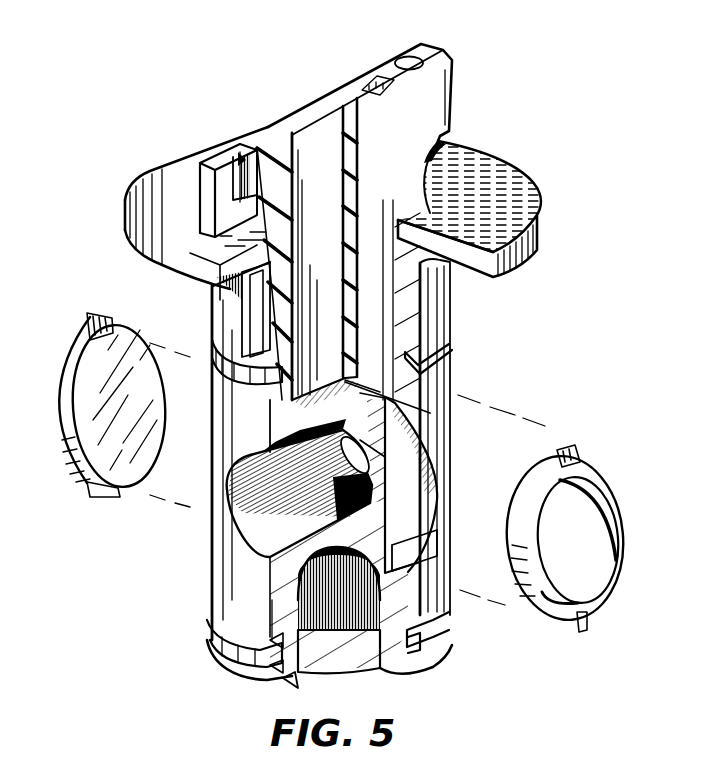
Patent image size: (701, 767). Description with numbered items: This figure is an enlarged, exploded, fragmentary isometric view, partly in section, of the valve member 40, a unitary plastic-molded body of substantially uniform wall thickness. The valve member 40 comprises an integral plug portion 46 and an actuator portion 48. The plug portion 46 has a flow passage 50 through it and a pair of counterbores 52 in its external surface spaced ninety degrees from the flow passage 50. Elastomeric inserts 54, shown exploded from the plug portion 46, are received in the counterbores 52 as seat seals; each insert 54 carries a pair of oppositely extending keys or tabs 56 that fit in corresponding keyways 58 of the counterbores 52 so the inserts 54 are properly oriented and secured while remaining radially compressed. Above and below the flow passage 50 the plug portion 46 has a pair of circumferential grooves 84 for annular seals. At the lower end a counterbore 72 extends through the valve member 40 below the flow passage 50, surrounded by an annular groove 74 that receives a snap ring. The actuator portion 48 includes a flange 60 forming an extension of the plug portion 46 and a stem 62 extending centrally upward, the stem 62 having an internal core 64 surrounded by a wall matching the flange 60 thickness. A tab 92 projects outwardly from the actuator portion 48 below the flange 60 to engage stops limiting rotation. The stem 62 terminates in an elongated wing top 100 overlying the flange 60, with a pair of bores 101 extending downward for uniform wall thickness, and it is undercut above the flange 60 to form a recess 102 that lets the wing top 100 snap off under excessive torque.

The valve member 40 is at (578, 327).
The plug portion 46 is at (240, 555).
The actuator portion 48 is at (213, 302).
The flow passage 50 is at (240, 502).
The counterbores 52 is at (436, 477).
The elastomeric inserts 54 is at (92, 378).
The keys or tabs 56 is at (105, 316).
The keyways 58 is at (411, 545).
The flange 60 is at (140, 183).
The stem 62 is at (380, 163).
The internal core 64 is at (332, 263).
The counterbore 72 is at (352, 618).
The annular groove 74 is at (298, 684).
The circumferential grooves 84 is at (212, 630).
The tabs 92 is at (250, 321).
The wing top 100 is at (272, 128).
The bores 101 is at (402, 57).
The recess 102 is at (258, 220).